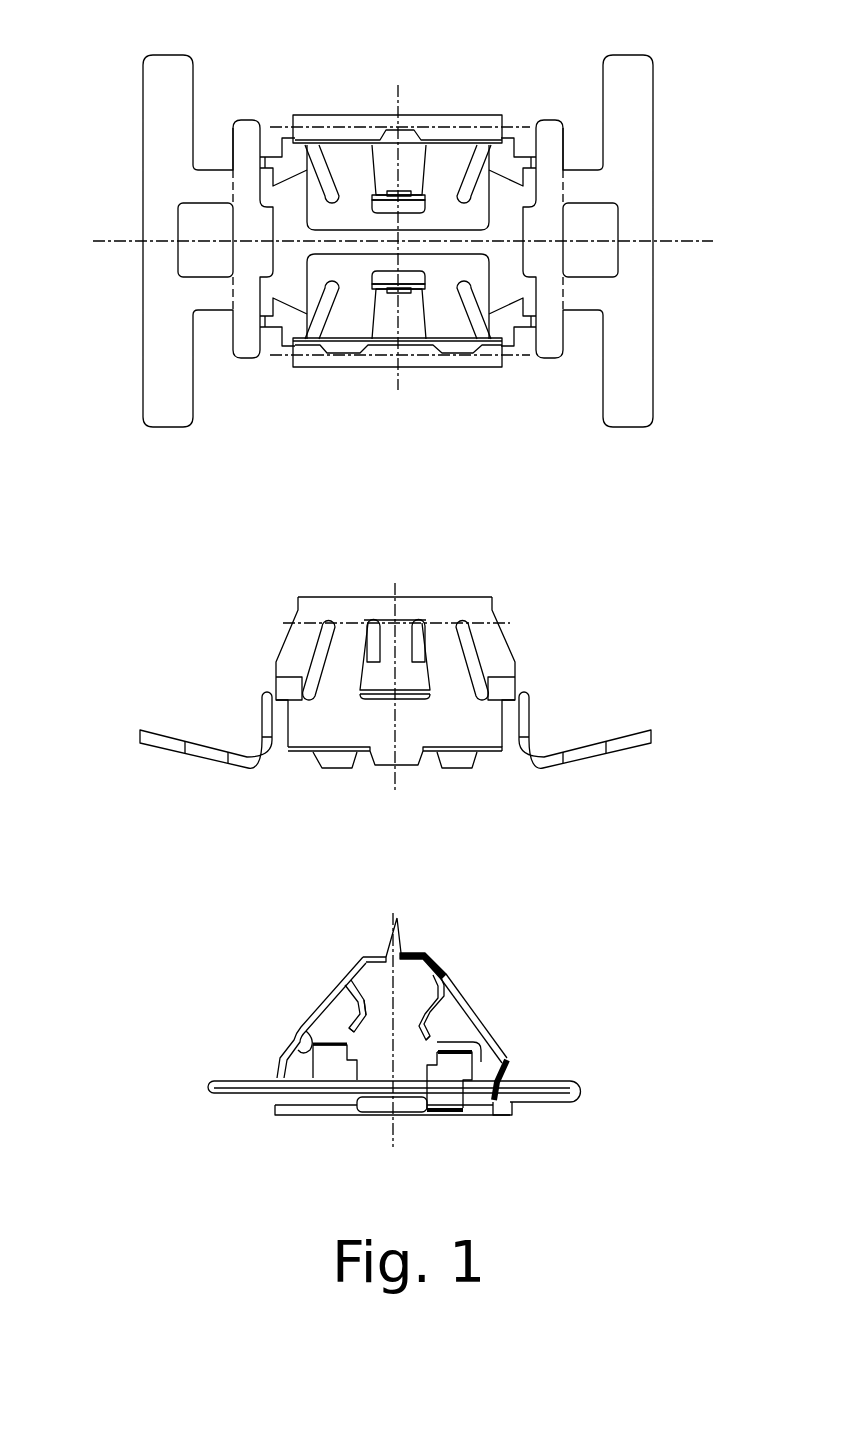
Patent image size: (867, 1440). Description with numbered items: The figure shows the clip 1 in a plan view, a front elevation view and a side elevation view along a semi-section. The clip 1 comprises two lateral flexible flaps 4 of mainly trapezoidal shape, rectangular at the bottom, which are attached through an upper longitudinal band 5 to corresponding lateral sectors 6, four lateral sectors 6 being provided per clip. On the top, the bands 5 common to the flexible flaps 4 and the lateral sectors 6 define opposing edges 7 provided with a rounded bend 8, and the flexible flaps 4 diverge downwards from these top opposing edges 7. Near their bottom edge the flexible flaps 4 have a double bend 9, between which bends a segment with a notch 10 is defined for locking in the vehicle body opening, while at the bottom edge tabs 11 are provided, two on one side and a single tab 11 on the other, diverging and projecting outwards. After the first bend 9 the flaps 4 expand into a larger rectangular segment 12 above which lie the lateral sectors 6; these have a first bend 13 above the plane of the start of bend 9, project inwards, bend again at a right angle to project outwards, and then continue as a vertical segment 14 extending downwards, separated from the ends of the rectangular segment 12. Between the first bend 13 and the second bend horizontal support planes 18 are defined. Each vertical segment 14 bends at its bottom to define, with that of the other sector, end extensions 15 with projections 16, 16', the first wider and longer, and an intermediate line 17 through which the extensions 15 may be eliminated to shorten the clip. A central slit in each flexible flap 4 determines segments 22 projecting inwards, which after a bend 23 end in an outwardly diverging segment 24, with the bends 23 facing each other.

The clip 1 is at (362, 89).
The flexible flaps 4 is at (350, 655).
The upper longitudinal band 5 is at (347, 605).
The lateral sectors 6 is at (347, 163).
The opposing edges 7 is at (395, 923).
The rounded bend 8 is at (373, 958).
The double bend 9 is at (508, 1062).
The notch 10 is at (453, 123).
The tabs 11 is at (460, 765).
The rectangular segment 12 is at (455, 345).
The first bend 13 is at (283, 1043).
The vertical segment 14 is at (263, 720).
The end extensions 15 is at (160, 223).
The projection 16 is at (405, 239).
The projection 16' is at (414, 87).
The intermediate line 17 is at (233, 183).
The horizontal support planes 18 is at (287, 168).
The segments 22 is at (372, 337).
The bend 23 is at (362, 1015).
The outwardly diverging segment 24 is at (353, 1028).